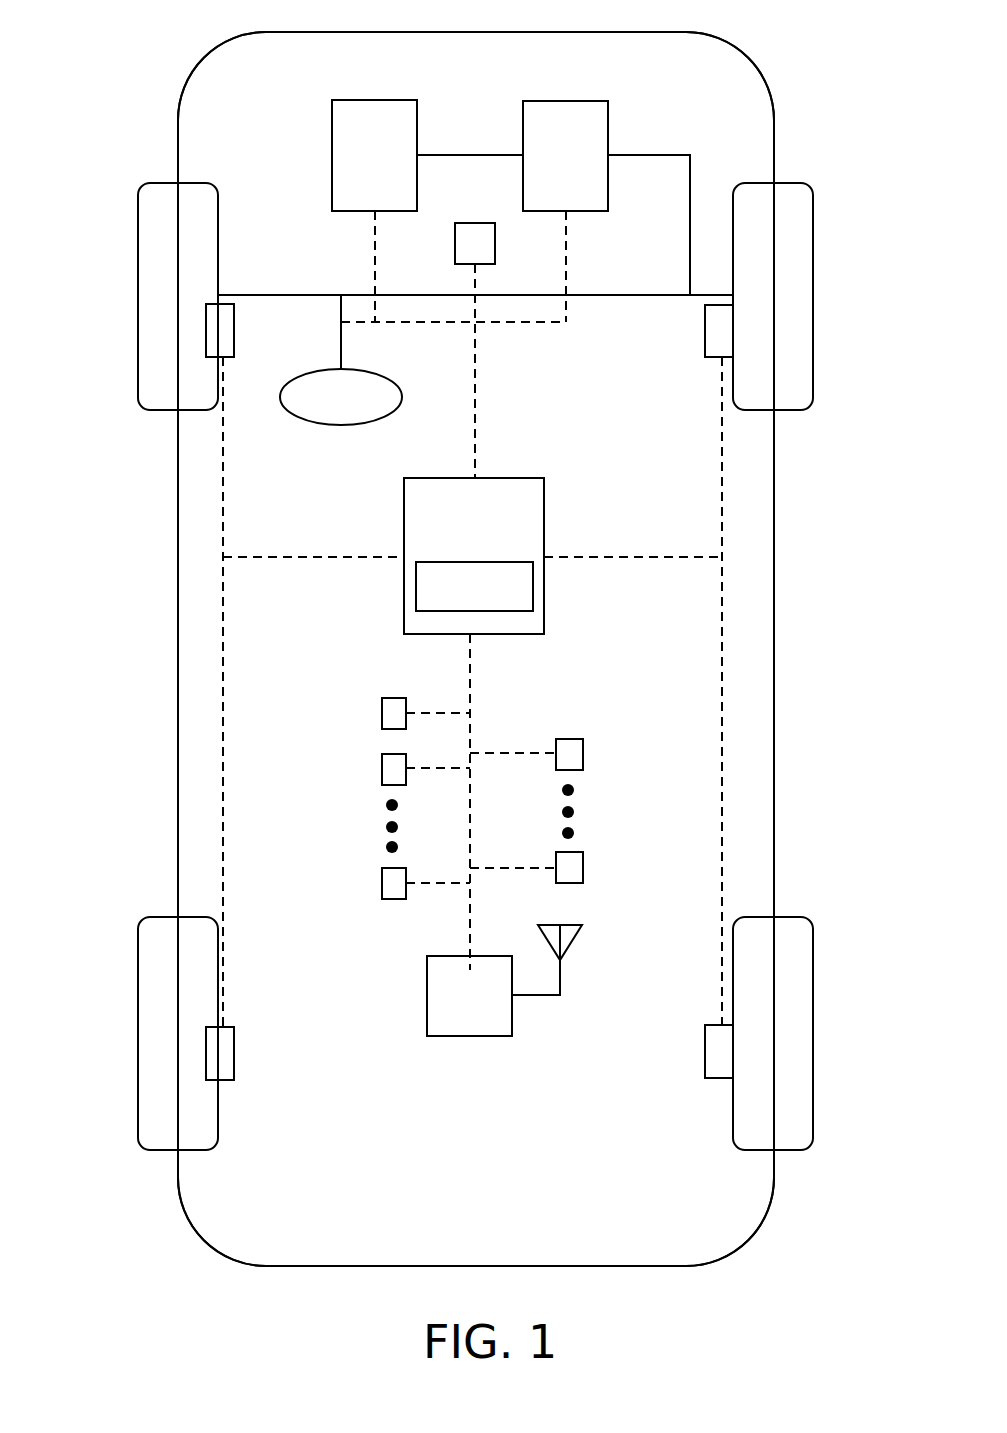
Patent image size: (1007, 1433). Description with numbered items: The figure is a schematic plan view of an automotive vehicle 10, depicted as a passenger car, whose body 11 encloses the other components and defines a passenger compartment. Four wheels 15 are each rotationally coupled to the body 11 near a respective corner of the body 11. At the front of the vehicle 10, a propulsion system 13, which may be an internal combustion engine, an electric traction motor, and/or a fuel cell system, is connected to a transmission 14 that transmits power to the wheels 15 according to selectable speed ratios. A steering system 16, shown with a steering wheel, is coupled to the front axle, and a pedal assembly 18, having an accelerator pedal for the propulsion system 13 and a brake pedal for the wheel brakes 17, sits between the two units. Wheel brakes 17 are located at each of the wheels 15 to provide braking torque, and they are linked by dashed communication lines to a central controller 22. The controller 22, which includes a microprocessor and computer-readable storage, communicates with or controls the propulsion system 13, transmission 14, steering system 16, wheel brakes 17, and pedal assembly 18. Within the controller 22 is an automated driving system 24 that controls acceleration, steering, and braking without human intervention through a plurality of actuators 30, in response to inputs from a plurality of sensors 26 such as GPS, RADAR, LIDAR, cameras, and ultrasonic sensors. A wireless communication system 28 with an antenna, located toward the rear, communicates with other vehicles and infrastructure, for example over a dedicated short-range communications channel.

The vehicle 10 is at (130, 20).
The body 11 is at (774, 598).
The propulsion system 13 is at (332, 158).
The transmission 14 is at (608, 115).
The wheels 15 is at (218, 220).
The steering system 16 is at (334, 425).
The wheel brakes 17 is at (234, 350).
The pedal assembly 18 is at (470, 223).
The controller 22 is at (533, 567).
The automated driving system 24 is at (505, 611).
The sensors 26 is at (382, 710).
The wireless communication system 28 is at (483, 1036).
The actuators 30 is at (583, 755).